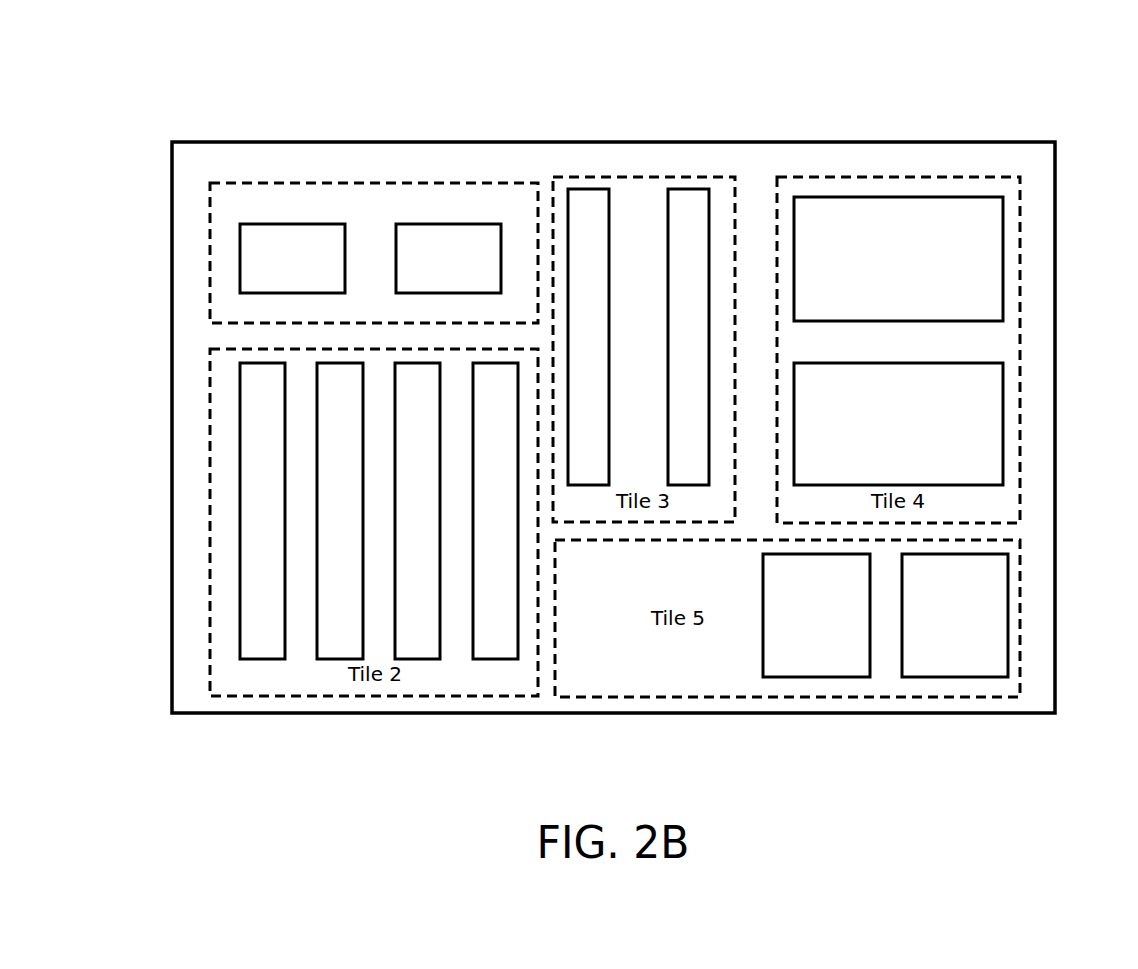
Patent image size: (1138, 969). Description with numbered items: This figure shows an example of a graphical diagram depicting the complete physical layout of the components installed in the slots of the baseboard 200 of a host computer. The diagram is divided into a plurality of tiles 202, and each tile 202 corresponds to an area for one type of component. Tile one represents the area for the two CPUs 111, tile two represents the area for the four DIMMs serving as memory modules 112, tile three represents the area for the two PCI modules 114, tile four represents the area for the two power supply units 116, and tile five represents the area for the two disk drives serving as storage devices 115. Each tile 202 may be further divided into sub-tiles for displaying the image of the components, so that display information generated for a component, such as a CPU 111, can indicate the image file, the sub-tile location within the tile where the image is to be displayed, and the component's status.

The baseboard 200 is at (100, 169).
The tile 202 is at (210, 262).
The central processing unit (CPU) 111 is at (300, 224).
The memory module 112 is at (257, 659).
The peripheral component interconnect (PCI) module 114 is at (593, 189).
The storage device 115 is at (825, 677).
The power supply unit (PSU) 116 is at (1005, 265).